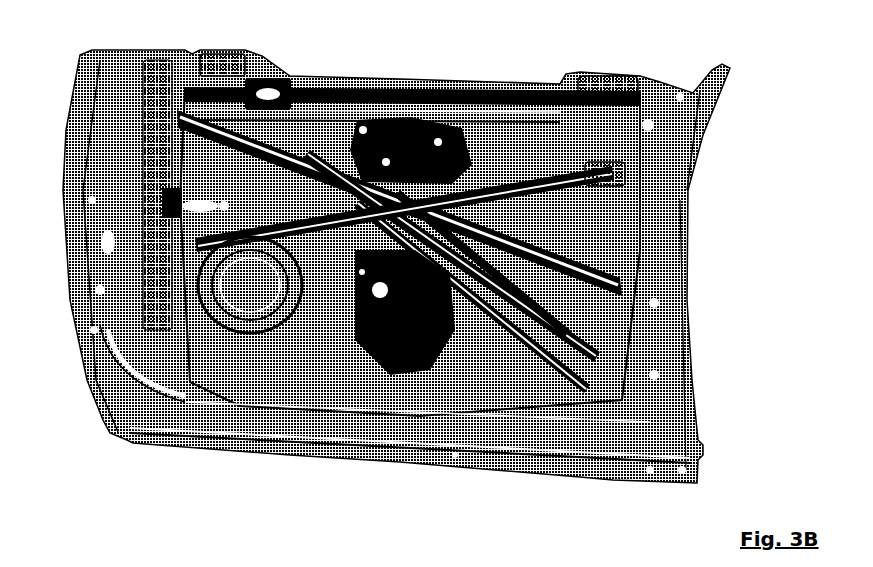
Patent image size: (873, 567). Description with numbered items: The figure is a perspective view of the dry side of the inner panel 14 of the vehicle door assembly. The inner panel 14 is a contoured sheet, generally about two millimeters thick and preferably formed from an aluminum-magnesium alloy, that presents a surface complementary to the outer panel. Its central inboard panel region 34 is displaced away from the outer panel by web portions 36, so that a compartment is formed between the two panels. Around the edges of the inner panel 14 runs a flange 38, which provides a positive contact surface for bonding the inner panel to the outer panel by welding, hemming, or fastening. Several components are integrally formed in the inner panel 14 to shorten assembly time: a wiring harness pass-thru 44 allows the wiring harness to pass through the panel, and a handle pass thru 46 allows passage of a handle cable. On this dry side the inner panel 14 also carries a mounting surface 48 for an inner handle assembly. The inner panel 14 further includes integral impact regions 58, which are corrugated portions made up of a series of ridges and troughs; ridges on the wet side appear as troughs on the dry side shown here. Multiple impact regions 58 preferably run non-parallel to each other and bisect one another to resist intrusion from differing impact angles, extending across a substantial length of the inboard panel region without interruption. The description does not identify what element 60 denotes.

The inner panel 14 is at (72, 436).
The inboard panel region 34 is at (486, 162).
The web portions 36 is at (164, 196).
The flange 38 is at (392, 456).
The wiring harness pass-thru 44 is at (66, 160).
The handle pass thru 46 is at (266, 94).
The mounting surface 48 is at (398, 98).
The integral impact region 58 is at (533, 188).
The upper reinforcement beam 60 is at (356, 88).